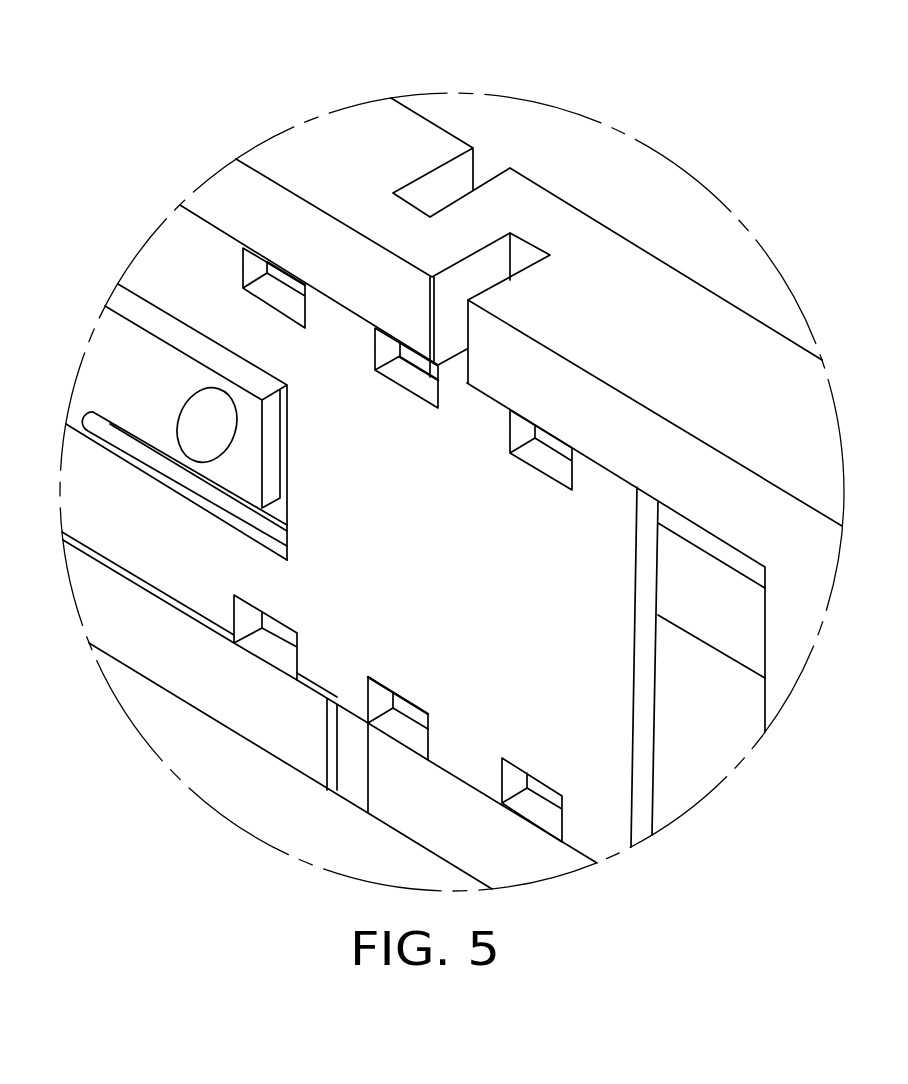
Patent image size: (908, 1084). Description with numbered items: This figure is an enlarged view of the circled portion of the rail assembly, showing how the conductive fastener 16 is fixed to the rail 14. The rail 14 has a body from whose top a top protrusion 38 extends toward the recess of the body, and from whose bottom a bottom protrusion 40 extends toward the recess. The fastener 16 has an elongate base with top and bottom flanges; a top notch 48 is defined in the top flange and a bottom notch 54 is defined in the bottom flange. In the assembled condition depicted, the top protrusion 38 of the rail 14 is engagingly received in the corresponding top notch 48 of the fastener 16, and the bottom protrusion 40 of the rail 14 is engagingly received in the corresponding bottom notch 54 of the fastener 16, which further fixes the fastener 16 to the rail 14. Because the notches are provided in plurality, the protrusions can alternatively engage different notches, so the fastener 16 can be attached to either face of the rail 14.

The rail 14 is at (706, 334).
The conductive fastener 16 is at (583, 662).
The top protrusion 38 is at (421, 358).
The top notch 48 is at (395, 368).
The bottom notch 54 is at (377, 697).
The bottom protrusion 40 is at (396, 717).